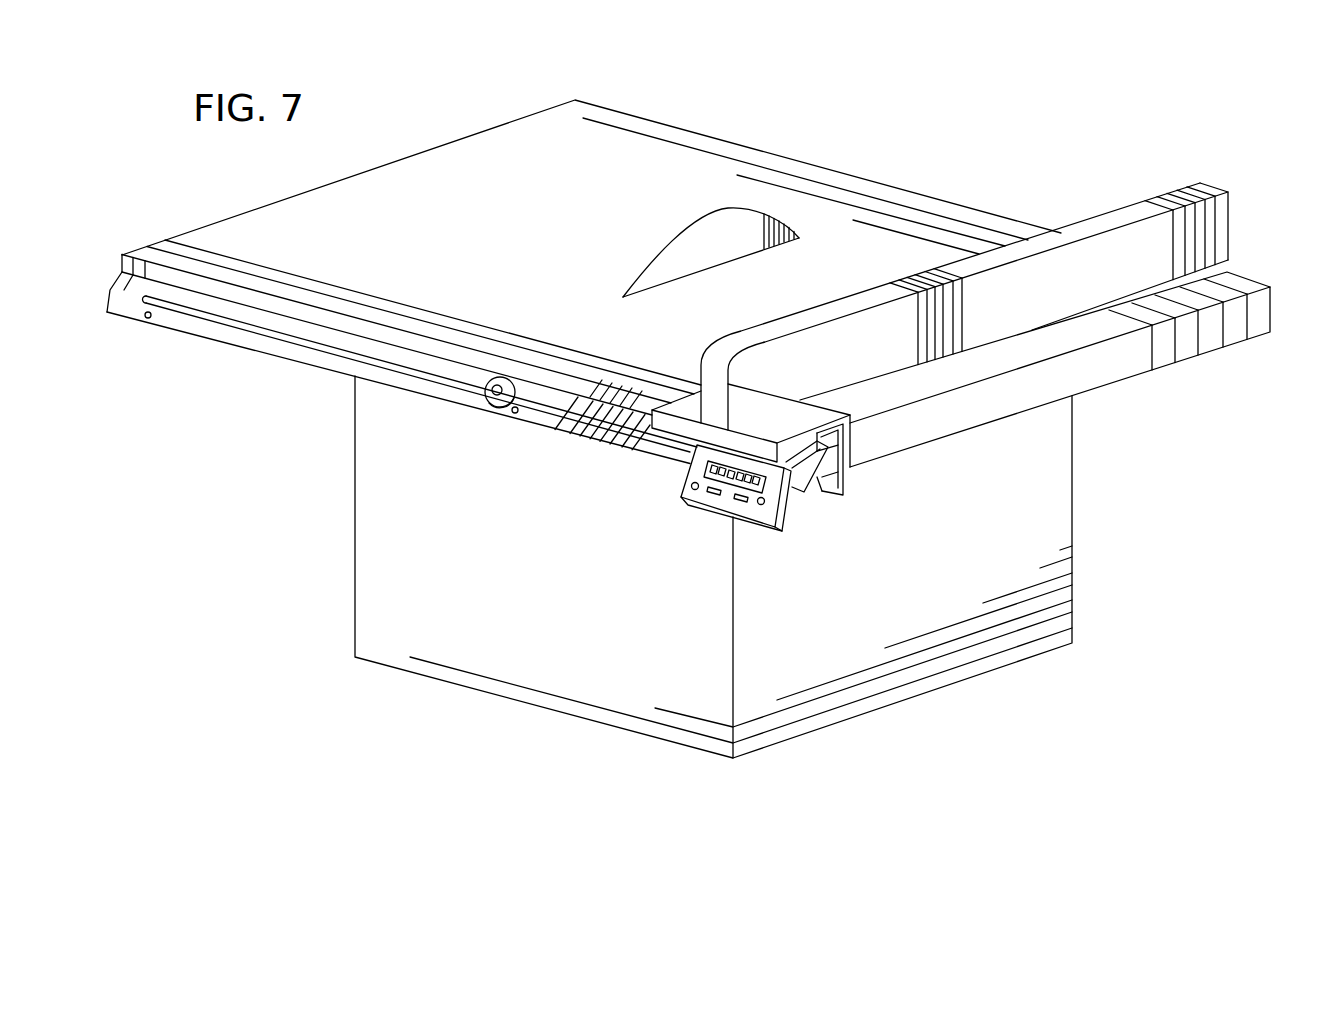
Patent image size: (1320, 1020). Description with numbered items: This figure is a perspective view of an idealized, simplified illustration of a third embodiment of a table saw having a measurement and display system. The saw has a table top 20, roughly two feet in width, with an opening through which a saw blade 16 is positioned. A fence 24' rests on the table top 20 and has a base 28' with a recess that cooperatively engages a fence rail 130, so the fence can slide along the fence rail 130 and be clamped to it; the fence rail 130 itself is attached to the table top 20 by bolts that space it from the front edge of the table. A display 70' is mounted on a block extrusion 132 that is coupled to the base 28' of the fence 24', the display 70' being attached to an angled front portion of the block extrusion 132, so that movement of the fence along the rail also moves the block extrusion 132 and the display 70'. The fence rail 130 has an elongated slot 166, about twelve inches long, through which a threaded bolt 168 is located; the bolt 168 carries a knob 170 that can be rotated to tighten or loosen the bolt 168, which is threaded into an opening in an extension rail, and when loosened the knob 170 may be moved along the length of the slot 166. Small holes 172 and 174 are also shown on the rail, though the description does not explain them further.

The saw blade 16 is at (733, 237).
The table top 20 is at (887, 207).
The fence 24' is at (964, 287).
The base 28' is at (961, 382).
The display 70' is at (736, 506).
The fence rail 130 is at (840, 457).
The block extrusion 132 is at (787, 518).
The elongated slot 166 is at (227, 326).
The threaded bolt 168 is at (498, 387).
The knob 170 is at (486, 400).
The mounting hole 172 is at (147, 319).
The mounting hole 174 is at (515, 414).